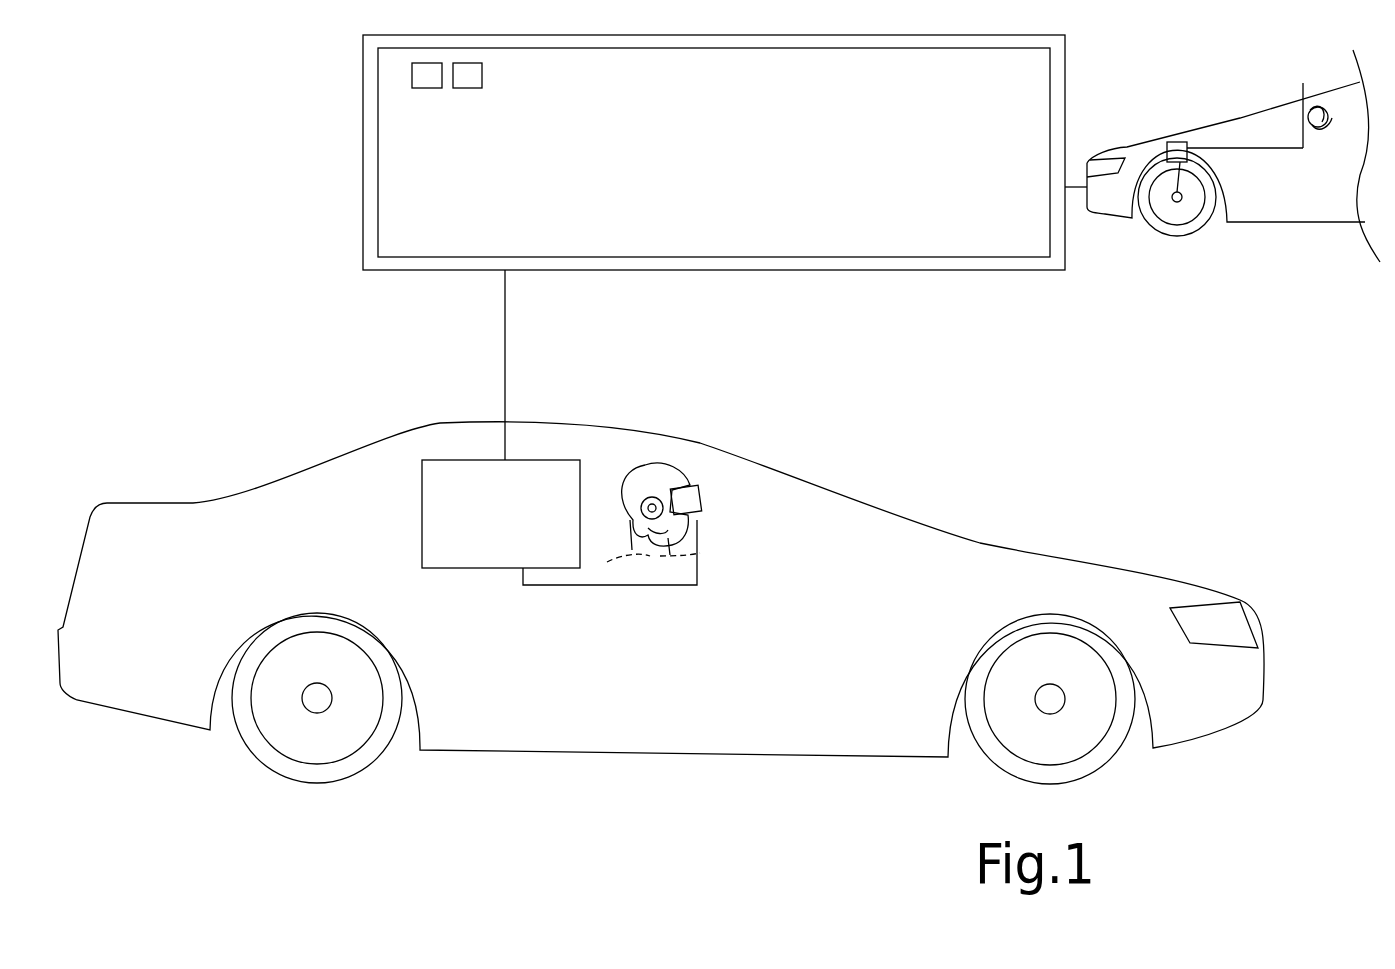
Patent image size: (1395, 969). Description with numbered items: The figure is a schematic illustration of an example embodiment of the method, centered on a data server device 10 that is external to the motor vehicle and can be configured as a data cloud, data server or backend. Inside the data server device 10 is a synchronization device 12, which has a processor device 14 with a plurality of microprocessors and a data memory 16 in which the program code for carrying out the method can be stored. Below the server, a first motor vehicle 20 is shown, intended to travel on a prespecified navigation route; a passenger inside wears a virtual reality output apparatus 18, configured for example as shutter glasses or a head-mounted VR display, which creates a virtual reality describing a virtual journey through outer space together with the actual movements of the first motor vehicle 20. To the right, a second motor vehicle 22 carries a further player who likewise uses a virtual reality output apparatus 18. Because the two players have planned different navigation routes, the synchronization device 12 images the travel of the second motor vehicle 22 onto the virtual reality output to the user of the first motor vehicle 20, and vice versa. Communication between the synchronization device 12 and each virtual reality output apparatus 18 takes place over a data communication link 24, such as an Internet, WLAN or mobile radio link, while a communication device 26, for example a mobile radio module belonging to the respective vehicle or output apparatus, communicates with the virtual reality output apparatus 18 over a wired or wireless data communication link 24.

The data server device 10 is at (363, 257).
The synchronization device 12 is at (378, 217).
The processor device 14 is at (412, 80).
The data memory 16 is at (460, 88).
The virtual reality output apparatus 18 is at (700, 492).
The first motor vehicle 20 is at (128, 718).
The second motor vehicle 22 is at (1130, 218).
The data communication link 24 is at (506, 322).
The communication device 26 is at (422, 525).